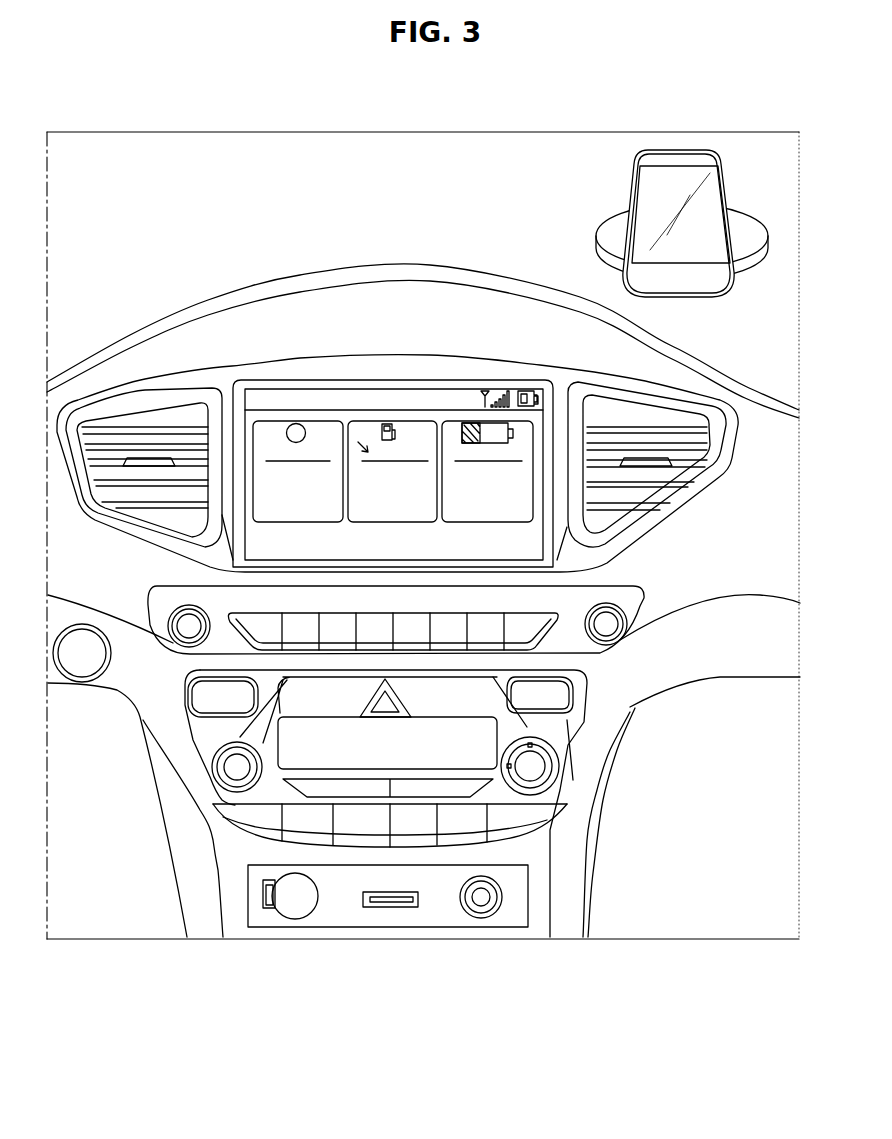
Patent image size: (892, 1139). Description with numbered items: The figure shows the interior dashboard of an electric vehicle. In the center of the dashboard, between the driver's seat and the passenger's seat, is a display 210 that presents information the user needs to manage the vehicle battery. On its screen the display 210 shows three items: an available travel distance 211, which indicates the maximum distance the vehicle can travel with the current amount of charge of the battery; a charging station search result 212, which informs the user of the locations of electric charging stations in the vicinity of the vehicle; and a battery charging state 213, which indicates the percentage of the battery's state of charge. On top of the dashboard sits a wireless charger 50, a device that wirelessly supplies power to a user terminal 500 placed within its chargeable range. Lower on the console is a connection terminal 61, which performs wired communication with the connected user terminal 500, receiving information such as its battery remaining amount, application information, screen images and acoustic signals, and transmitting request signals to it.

The user terminal 500 is at (684, 157).
The wireless charger 50 is at (750, 226).
The display 210 is at (447, 388).
The available travel distance 211 is at (320, 523).
The charging station search result 212 is at (415, 523).
The battery charging state 213 is at (509, 523).
The connection terminal 61 is at (390, 908).